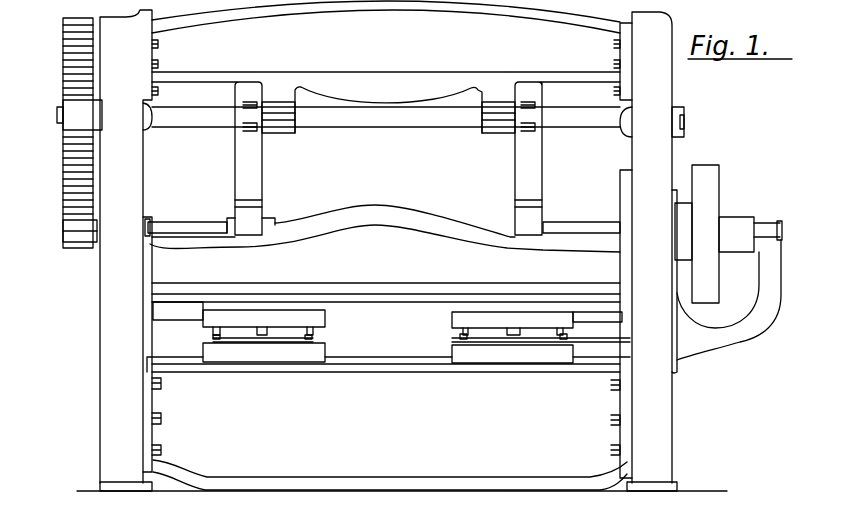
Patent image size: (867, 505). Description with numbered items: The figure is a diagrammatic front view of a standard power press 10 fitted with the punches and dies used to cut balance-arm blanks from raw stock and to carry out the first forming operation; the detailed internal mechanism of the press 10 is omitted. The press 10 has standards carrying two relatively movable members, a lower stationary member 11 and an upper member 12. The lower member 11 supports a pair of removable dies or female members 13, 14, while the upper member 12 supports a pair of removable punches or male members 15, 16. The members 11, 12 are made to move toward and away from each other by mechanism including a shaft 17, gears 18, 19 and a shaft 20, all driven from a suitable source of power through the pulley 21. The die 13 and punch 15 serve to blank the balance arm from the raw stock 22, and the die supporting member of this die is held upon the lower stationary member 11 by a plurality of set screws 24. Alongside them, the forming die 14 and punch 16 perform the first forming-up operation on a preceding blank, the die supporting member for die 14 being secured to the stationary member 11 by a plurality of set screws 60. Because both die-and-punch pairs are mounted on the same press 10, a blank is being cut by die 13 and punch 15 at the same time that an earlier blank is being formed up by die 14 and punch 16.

The press 10 is at (386, 36).
The lower stationary member 11 is at (347, 470).
The movable member 12 is at (413, 218).
The die 13 is at (492, 363).
The die 14 is at (280, 368).
The punch 15 is at (498, 318).
The punch 16 is at (302, 316).
The shaft 17 is at (333, 123).
The gear 18 is at (82, 23).
The gear 19 is at (78, 248).
The shaft 20 is at (175, 222).
The pulley 21 is at (719, 200).
The raw stock 22 is at (623, 340).
The set screws 24 is at (457, 363).
The set screws 60 is at (263, 362).